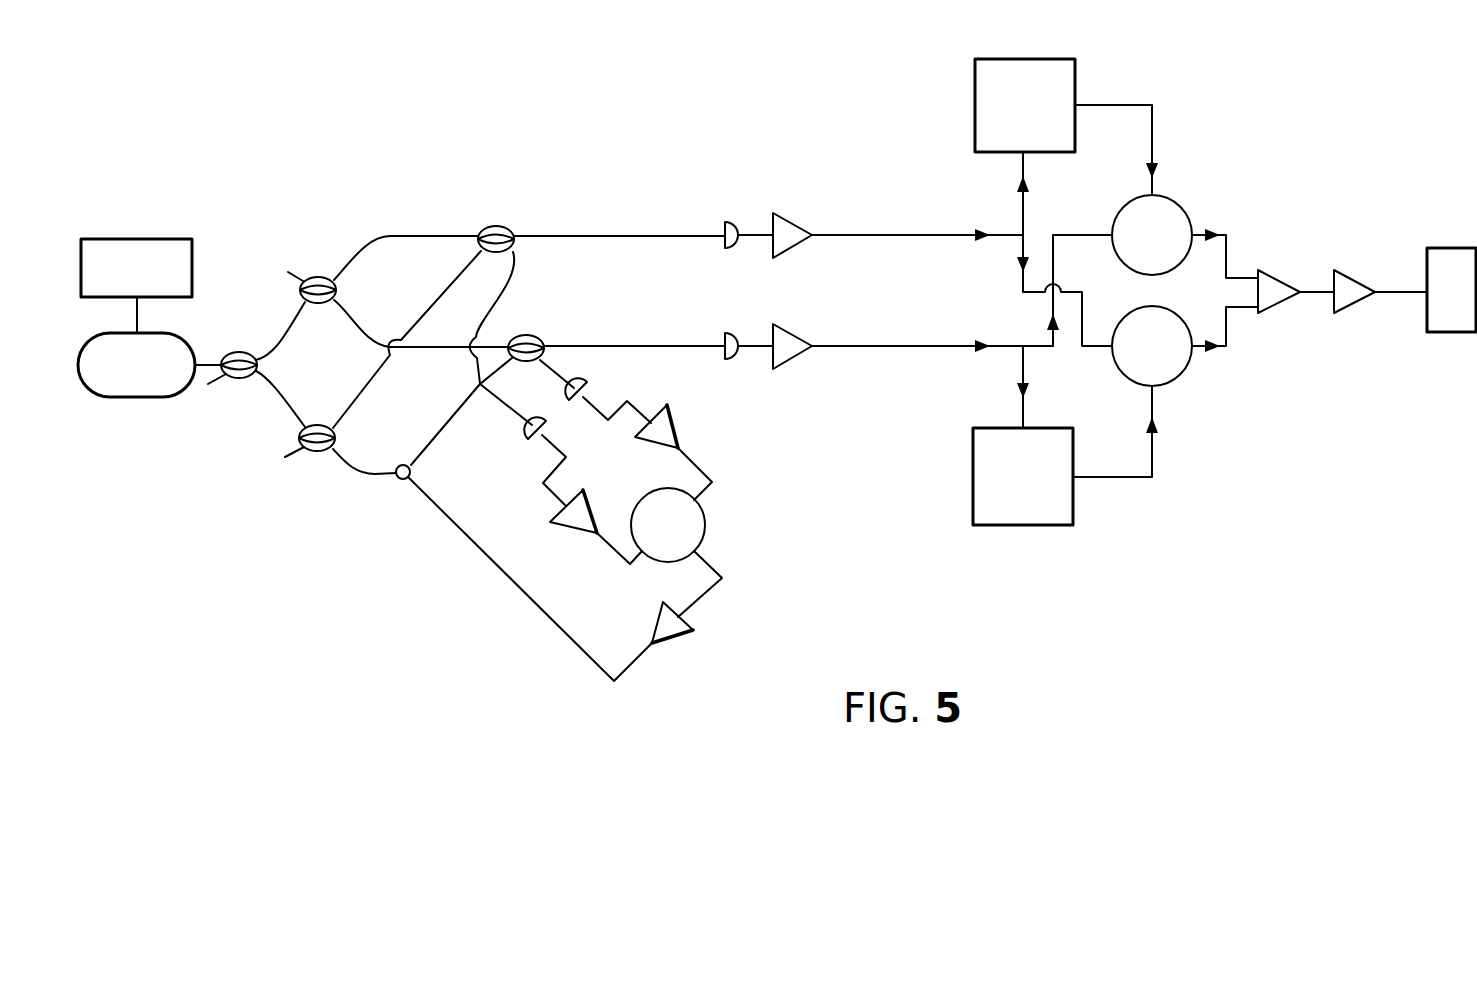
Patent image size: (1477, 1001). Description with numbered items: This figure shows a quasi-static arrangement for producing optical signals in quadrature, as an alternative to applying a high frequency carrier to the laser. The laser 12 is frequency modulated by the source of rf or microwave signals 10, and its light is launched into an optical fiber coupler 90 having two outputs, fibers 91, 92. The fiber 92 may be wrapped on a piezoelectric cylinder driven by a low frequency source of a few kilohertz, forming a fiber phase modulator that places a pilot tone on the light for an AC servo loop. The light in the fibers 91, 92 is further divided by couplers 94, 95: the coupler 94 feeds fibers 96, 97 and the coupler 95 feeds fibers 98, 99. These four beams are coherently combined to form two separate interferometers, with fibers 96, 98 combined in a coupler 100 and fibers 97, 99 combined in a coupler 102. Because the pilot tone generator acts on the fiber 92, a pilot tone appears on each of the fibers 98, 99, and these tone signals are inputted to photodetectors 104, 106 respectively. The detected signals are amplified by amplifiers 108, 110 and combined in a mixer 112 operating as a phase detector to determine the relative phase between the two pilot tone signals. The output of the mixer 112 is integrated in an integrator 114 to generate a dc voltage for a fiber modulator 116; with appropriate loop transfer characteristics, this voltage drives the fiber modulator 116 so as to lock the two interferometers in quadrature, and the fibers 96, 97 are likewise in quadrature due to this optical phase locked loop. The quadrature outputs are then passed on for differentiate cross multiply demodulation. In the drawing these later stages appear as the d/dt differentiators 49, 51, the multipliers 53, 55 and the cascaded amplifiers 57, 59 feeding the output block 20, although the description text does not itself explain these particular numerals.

The source of rf or microwave signals 10 is at (137, 239).
The laser 12 is at (152, 397).
The output device 20 is at (1445, 248).
The differentiator 49 is at (1075, 63).
The differentiator 51 is at (1073, 499).
The multiplier 53 is at (1185, 213).
The multiplier 55 is at (1188, 365).
The amplifier 57 is at (1268, 270).
The amplifier 59 is at (1347, 282).
The optical fiber coupler 90 is at (238, 352).
The fiber 91 is at (288, 320).
The fiber 92 is at (290, 422).
The coupler 94 is at (318, 277).
The coupler 95 is at (322, 450).
The fiber 96 is at (397, 235).
The fiber 97 is at (352, 316).
The fiber 98 is at (382, 387).
The fiber 99 is at (442, 428).
The coupler 100 is at (497, 226).
The coupler 102 is at (528, 335).
The photodetector 104 is at (585, 402).
The photodetector 106 is at (531, 442).
The amplifier 108 is at (672, 425).
The amplifier 110 is at (553, 520).
The mixer 112 is at (706, 516).
The integrator 114 is at (660, 640).
The fiber modulator 116 is at (412, 466).